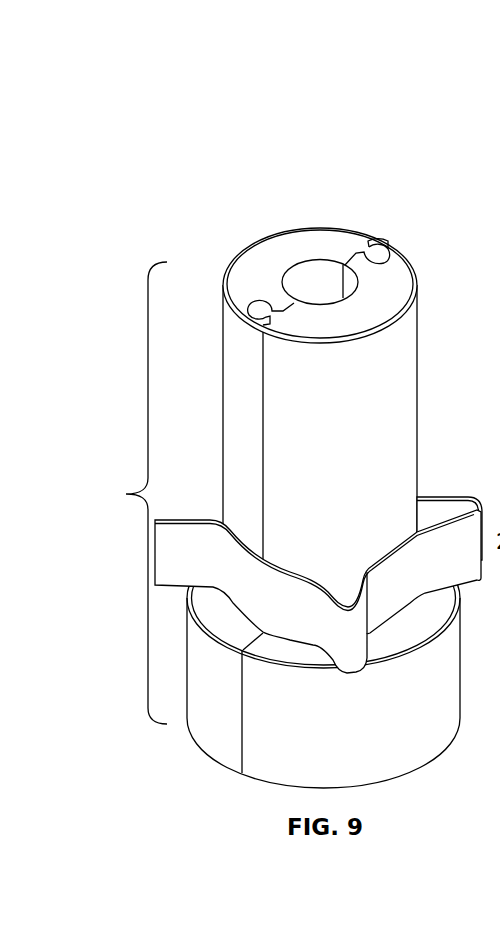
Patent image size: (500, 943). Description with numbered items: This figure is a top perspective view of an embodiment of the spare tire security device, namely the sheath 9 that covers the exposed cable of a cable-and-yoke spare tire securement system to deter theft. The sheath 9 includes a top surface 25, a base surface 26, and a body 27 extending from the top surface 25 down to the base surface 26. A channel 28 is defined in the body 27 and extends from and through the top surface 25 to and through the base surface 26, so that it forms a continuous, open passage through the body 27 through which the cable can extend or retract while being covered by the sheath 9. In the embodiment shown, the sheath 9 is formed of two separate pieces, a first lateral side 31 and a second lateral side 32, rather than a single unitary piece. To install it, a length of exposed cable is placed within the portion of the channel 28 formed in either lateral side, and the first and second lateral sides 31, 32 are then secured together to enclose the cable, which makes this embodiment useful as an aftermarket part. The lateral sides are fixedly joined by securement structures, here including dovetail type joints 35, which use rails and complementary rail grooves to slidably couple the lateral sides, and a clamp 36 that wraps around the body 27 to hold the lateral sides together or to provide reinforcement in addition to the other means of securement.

The sheath 9 is at (418, 307).
The top surface 25 is at (305, 228).
The base surface 26 is at (388, 780).
The body 27 is at (132, 493).
The channel 28 is at (313, 288).
The first lateral side 31 is at (223, 278).
The second lateral side 32 is at (392, 256).
The dovetail type joint 35 is at (384, 245).
The clamp 36 is at (450, 496).